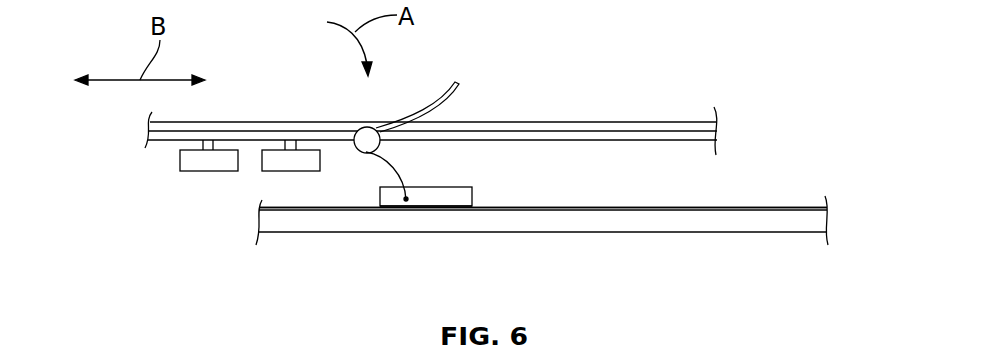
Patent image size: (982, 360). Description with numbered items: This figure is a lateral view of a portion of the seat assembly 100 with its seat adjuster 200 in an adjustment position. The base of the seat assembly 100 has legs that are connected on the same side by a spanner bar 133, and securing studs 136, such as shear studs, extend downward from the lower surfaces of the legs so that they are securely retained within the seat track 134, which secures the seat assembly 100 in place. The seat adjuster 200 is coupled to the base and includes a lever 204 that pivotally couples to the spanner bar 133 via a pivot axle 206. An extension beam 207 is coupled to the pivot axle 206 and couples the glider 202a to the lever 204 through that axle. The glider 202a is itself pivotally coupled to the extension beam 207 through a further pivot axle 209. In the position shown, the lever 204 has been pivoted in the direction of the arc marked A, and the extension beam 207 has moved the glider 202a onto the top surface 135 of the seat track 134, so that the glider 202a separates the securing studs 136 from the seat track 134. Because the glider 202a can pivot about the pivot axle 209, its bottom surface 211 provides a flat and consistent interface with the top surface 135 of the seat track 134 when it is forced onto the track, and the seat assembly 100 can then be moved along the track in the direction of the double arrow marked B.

The seat assembly 100 is at (662, 105).
The spanner bar 133 is at (523, 122).
The seat track 134 is at (768, 208).
The top surface 135 is at (598, 208).
The securing studs 136 is at (209, 171).
The seat adjuster 200 is at (353, 108).
The glider 202a is at (472, 197).
The lever 204 is at (459, 83).
The pivot axle 206 is at (367, 140).
The extension beam 207 is at (405, 175).
The pivot axle 209 is at (407, 200).
The bottom surface 211 is at (430, 208).